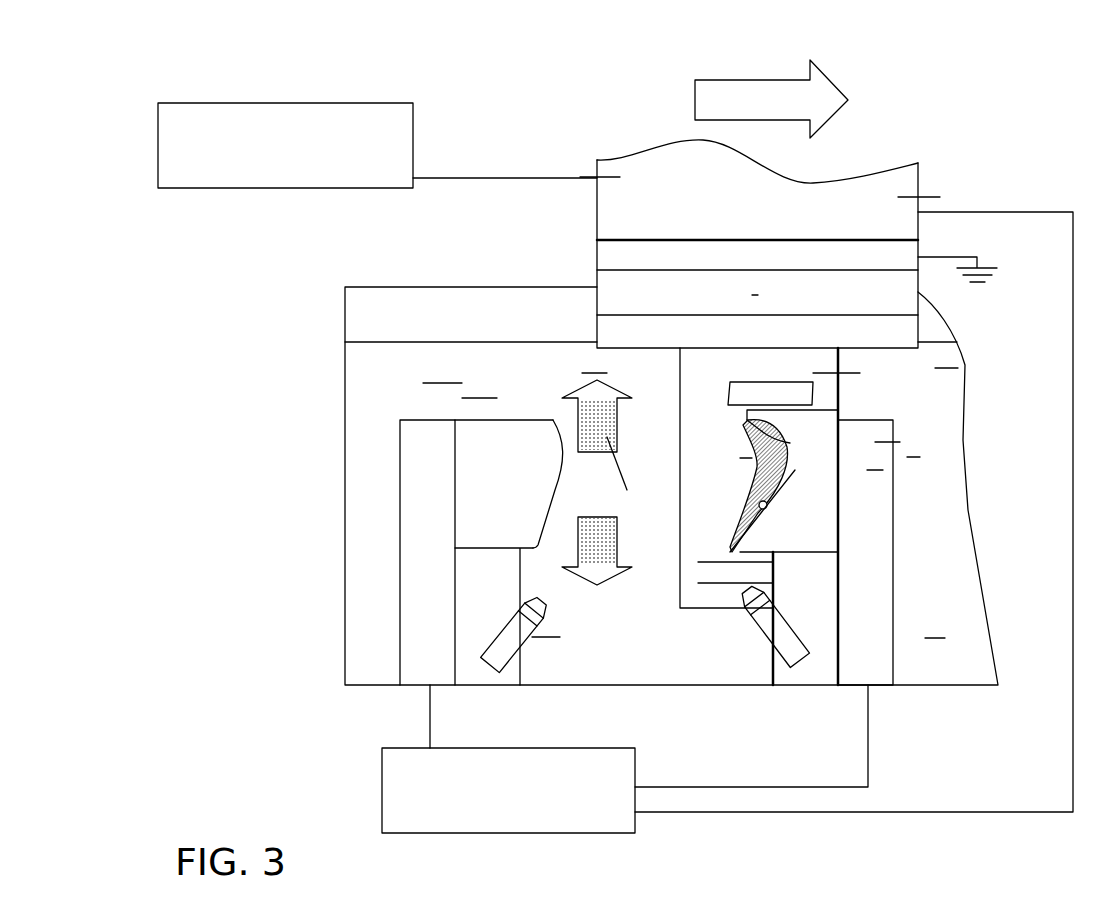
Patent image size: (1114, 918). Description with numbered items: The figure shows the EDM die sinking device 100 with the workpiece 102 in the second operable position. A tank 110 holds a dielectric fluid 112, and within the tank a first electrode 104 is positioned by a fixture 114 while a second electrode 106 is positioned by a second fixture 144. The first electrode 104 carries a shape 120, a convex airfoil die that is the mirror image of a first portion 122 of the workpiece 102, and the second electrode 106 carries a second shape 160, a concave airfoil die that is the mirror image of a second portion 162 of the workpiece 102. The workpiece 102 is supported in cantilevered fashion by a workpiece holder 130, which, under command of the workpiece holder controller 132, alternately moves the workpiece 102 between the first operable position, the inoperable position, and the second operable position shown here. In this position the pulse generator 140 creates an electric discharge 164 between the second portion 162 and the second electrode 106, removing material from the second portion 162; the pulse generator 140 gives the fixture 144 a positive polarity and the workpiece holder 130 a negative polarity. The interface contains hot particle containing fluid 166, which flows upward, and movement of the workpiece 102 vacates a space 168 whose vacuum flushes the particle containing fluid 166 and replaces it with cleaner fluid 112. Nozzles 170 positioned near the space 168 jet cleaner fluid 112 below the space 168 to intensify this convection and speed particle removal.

The EDM die sinking device 100 is at (922, 152).
The workpiece holder 130 is at (900, 197).
The workpiece holder controller 132 is at (377, 145).
The tank 110 is at (362, 322).
The fluid 112 is at (968, 365).
The first portion 122 is at (752, 458).
The shape 120 is at (527, 452).
The first electrode 104 is at (483, 482).
The fixture 114 is at (418, 580).
The second electrode 106 is at (810, 502).
The second shape 160 is at (790, 443).
The electric discharge 164 is at (752, 467).
The second portion 162 is at (778, 445).
The workpiece 102 is at (732, 382).
The fixture 144 is at (873, 572).
The particle containing fluid 166 is at (627, 490).
The space 168 is at (597, 482).
The nozzle 170 is at (505, 677).
The pulse generator 140 is at (625, 759).